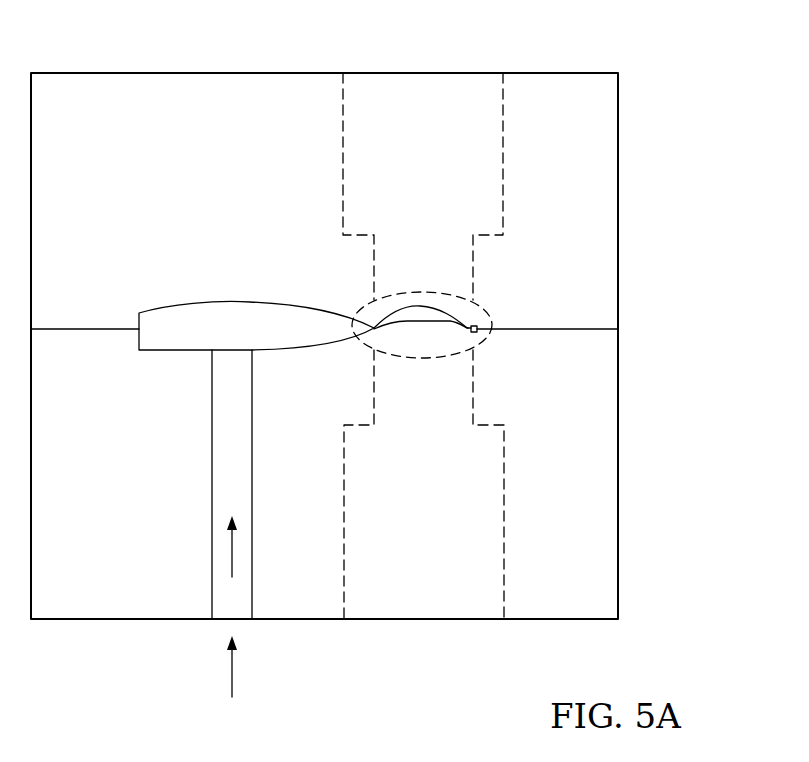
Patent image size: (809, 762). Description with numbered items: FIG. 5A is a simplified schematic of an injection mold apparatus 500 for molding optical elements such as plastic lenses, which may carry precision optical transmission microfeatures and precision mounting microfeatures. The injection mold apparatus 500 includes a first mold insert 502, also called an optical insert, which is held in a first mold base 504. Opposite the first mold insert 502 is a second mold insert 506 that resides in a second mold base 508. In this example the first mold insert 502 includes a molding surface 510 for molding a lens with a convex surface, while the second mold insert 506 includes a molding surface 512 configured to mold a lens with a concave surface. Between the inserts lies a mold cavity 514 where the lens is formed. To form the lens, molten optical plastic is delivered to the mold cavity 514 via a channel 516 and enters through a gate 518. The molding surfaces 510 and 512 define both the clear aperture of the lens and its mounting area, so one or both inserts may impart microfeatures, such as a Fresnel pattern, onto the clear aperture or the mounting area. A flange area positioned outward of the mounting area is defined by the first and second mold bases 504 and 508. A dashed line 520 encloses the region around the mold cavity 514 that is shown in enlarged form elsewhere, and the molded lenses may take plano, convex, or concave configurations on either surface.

The injection mold apparatus 500 is at (699, 104).
The first mold insert 502 is at (393, 82).
The first mold base 504 is at (145, 80).
The second mold insert 506 is at (397, 610).
The second mold base 508 is at (115, 612).
The molding surface 510 is at (432, 302).
The molding surface 512 is at (412, 322).
The mold cavity 514 is at (438, 318).
The channel 516 is at (253, 548).
The gate 518 is at (372, 326).
The dashed line 520 is at (480, 306).